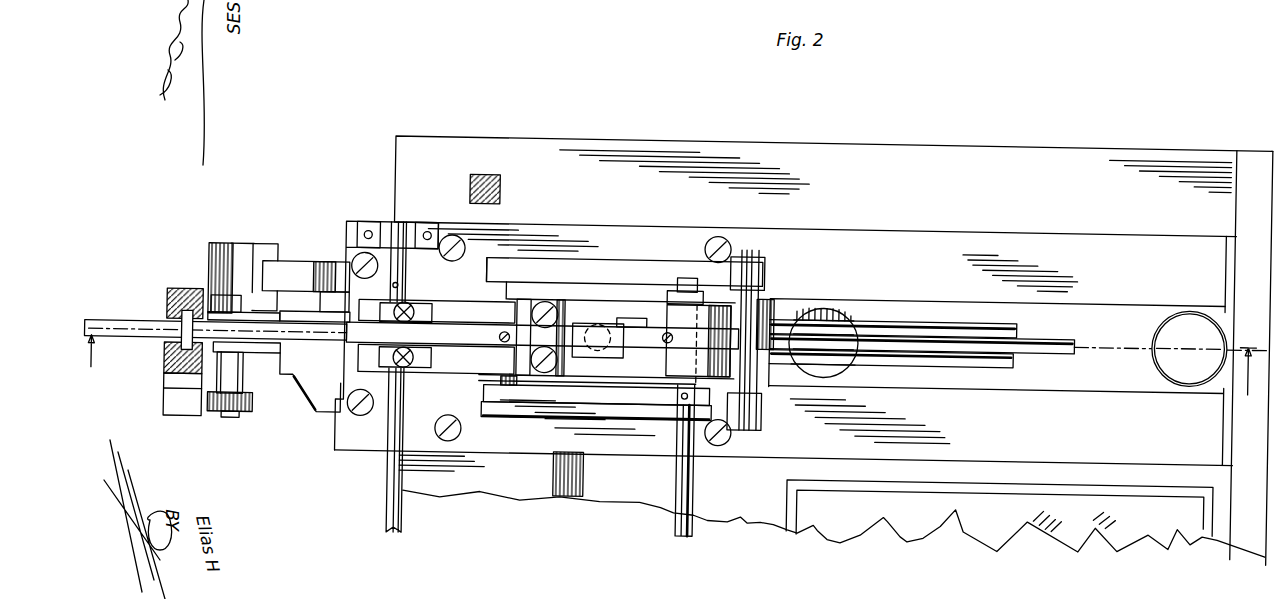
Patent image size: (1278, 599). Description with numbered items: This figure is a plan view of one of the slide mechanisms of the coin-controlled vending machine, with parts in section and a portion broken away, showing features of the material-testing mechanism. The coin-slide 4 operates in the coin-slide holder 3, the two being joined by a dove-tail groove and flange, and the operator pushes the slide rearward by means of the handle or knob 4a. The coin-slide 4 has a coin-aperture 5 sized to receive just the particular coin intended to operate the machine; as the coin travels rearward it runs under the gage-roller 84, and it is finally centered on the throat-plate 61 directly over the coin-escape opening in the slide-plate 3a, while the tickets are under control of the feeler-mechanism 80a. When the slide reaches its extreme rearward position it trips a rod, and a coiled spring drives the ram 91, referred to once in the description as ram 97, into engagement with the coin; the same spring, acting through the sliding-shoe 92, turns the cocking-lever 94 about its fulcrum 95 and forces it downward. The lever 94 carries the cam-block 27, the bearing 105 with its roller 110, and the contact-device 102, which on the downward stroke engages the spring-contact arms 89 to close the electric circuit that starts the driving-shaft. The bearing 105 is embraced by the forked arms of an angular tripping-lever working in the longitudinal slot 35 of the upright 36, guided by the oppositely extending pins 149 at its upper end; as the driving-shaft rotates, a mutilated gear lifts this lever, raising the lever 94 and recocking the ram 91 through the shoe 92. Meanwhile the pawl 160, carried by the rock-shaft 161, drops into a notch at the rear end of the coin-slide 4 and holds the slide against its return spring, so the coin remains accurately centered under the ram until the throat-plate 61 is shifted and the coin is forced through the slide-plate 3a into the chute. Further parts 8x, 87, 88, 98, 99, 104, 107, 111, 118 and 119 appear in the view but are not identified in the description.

The coin-slide holder 3 is at (1062, 221).
The slide-plate 3a is at (482, 504).
The coin-slide 4 is at (1103, 291).
The handle or knob 4a is at (1189, 349).
The coin-aperture 5 is at (829, 301).
The bracket plate 8x is at (417, 337).
The cam-block 27 is at (210, 262).
The longitudinal slot 35 is at (183, 344).
The upright 36 is at (170, 394).
The throat-plate 61 is at (608, 490).
The feeler-mechanism 80a is at (594, 400).
The gage-roller 84 is at (648, 256).
The standard 87 is at (710, 302).
The plate 88 is at (323, 304).
The spring-contact arms 89 is at (420, 303).
The ram 91 is at (622, 348).
The sliding-shoe 92 is at (632, 313).
The cocking-lever 94 is at (140, 325).
The fulcrum 95 is at (693, 310).
The ram 97 is at (562, 298).
The shaft 98 is at (592, 330).
The screw 99 is at (505, 341).
The contact-device 102 is at (405, 354).
The shaft 104 is at (405, 334).
The bearing 105 is at (250, 355).
The pin 107 is at (242, 375).
The roller 110 is at (240, 420).
The block 111 is at (225, 298).
The bracket 118 is at (270, 262).
The arm 119 is at (252, 266).
The pins 149 is at (170, 300).
The pawl 160 is at (328, 276).
The rock-shaft 161 is at (391, 499).